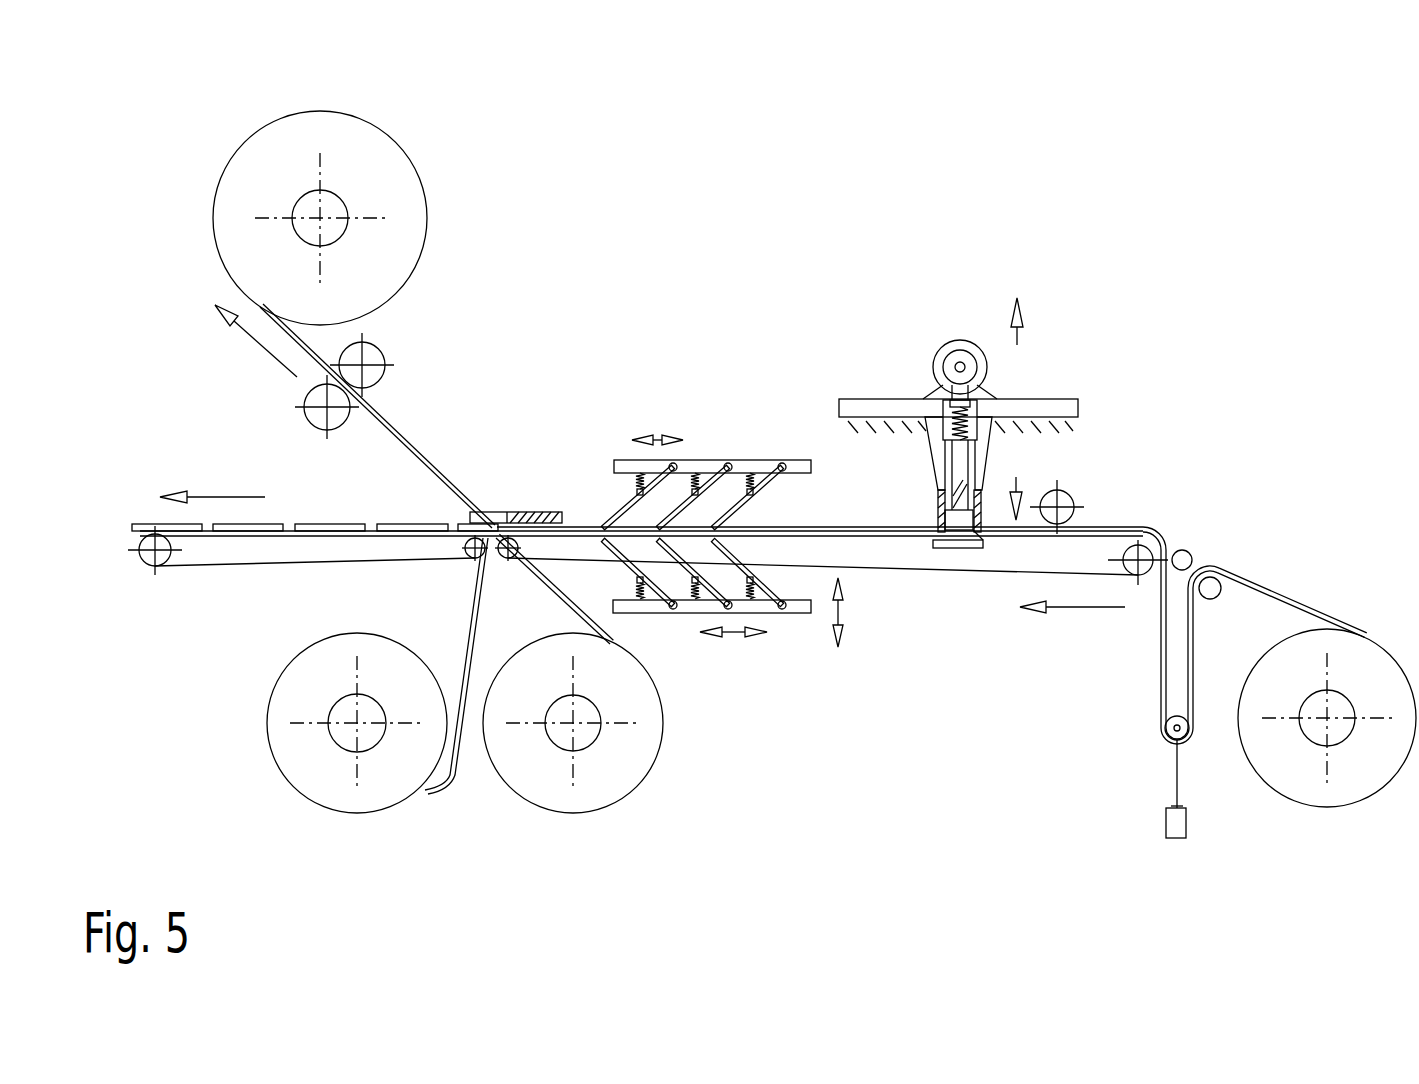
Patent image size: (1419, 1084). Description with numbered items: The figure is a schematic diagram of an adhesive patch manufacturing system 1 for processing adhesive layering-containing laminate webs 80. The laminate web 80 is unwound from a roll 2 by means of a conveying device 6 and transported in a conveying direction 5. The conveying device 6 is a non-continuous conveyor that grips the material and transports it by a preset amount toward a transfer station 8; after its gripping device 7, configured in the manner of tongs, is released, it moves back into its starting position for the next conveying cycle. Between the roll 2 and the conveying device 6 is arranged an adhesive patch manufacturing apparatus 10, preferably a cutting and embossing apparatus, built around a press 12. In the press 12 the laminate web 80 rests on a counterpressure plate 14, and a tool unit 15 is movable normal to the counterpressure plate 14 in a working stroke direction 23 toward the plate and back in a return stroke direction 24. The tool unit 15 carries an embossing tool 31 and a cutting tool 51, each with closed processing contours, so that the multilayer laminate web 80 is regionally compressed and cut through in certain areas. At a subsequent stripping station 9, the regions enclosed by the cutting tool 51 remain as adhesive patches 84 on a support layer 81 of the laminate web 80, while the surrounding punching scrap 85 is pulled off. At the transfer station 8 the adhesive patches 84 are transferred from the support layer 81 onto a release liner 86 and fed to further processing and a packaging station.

The adhesive patch manufacturing system 1 is at (708, 660).
The roll 2 is at (1345, 767).
The conveying direction 5 is at (1226, 730).
The conveying device 6 is at (652, 408).
The gripping device 7 is at (614, 503).
The transfer station 8 is at (494, 588).
The stripping station 9 is at (494, 498).
The adhesive patch manufacturing apparatus 10 is at (886, 368).
The press 12 is at (1032, 368).
The counterpressure plate 14 is at (953, 546).
The tool unit 15 is at (812, 288).
The working stroke direction 23 is at (1016, 477).
The return stroke direction 24 is at (973, 222).
The embossing tool 31 is at (978, 536).
The cutting tool 51 is at (933, 540).
The laminate web 80 is at (1143, 533).
The support layer 81 is at (560, 532).
The adhesive patches 84 is at (315, 288).
The punching scrap 85 is at (300, 345).
The release liner 86 is at (225, 532).